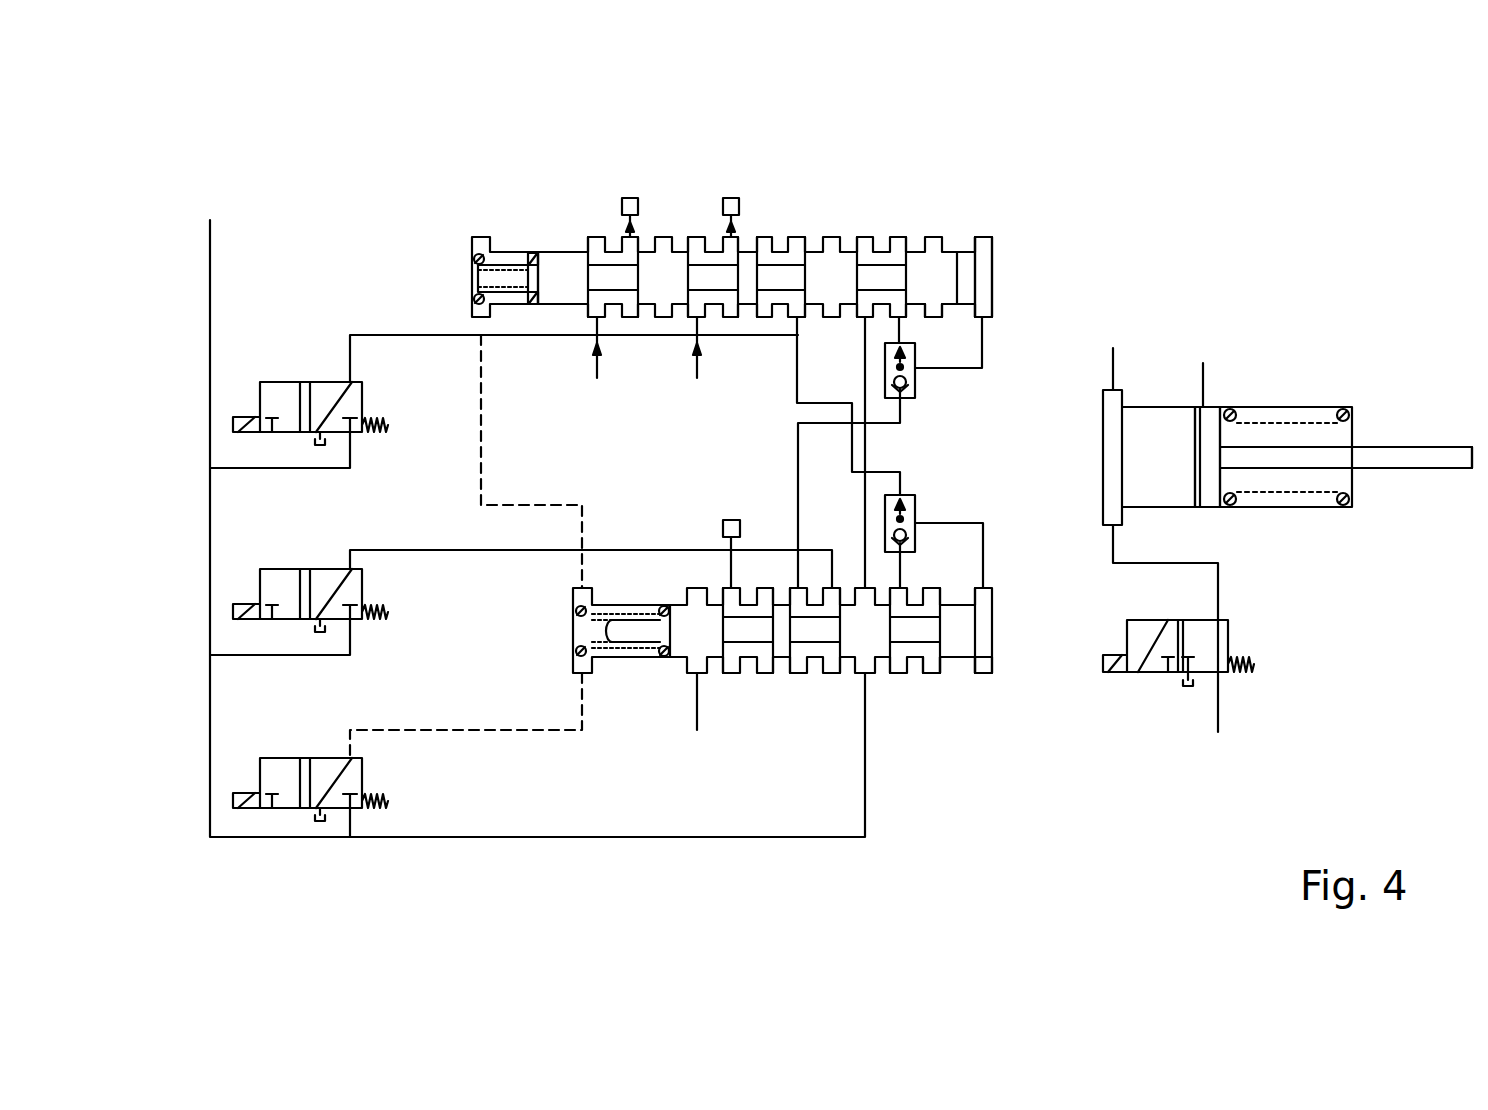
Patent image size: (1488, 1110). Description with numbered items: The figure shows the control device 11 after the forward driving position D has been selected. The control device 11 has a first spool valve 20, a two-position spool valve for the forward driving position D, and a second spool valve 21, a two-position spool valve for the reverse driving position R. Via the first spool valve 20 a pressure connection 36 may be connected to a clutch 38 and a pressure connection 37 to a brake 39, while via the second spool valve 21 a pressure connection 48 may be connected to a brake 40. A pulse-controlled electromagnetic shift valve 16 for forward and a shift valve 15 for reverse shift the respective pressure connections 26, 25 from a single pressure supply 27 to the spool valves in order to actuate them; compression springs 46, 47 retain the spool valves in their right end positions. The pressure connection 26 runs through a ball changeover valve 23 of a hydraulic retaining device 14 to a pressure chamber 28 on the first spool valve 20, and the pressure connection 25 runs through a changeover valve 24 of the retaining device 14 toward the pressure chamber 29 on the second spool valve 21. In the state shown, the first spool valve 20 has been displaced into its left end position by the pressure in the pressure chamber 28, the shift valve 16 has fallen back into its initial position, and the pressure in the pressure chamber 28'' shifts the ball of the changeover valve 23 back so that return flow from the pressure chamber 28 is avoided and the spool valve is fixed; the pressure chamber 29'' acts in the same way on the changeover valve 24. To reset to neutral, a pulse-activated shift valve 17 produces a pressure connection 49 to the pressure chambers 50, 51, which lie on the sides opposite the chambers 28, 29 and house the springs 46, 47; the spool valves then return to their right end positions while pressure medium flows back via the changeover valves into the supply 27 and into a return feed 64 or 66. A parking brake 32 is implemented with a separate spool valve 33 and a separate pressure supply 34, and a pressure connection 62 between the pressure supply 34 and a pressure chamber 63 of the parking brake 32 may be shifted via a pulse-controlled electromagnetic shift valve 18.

The control device 11 is at (1298, 210).
The hydraulic retaining device 14 is at (950, 478).
The electromagnetic shift valve 15 is at (272, 396).
The electromagnetic shift valve 16 is at (323, 588).
The electromagnetic shift valve 17 is at (275, 773).
The electromagnetic shift valve 18 is at (1162, 660).
The first spool valve 20 is at (935, 272).
The second spool valve 21 is at (975, 632).
The changeover valve 23 is at (908, 373).
The changeover valve 24 is at (912, 512).
The pressure connection 25 is at (417, 335).
The pressure connection 26 is at (406, 550).
The pressure supply 27 is at (210, 300).
The pressure chamber 28 is at (1027, 277).
The pressure chamber 28'' is at (889, 203).
The pressure chamber 29 is at (1023, 719).
The pressure chamber 29'' is at (916, 732).
The parking brake 32 is at (1378, 370).
The spool valve 33 is at (1208, 492).
The pressure supply 34 is at (1220, 692).
The pressure connection 36 is at (602, 367).
The pressure connection 37 is at (702, 367).
The clutch 38 is at (633, 200).
The brake 39 is at (733, 200).
The brake 40 is at (725, 522).
The compression spring 46 is at (483, 258).
The compression spring 47 is at (586, 600).
The pressure connection 48 is at (698, 728).
The pressure connection 49 is at (473, 732).
The pressure chamber 50 is at (627, 650).
The pressure chamber 51 is at (507, 297).
The pressure connection 62 is at (1218, 593).
The pressure chamber 63 is at (1149, 433).
The return feed 64 is at (935, 315).
The return feed 66 is at (930, 665).